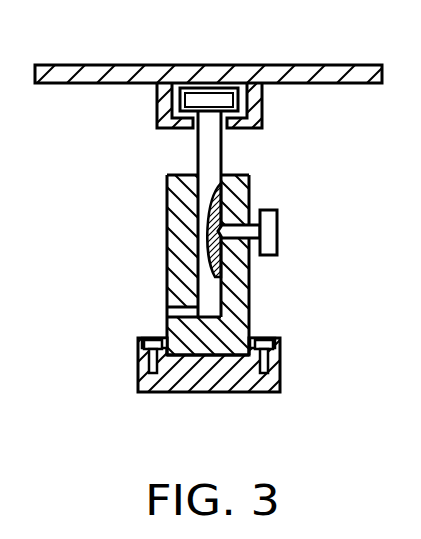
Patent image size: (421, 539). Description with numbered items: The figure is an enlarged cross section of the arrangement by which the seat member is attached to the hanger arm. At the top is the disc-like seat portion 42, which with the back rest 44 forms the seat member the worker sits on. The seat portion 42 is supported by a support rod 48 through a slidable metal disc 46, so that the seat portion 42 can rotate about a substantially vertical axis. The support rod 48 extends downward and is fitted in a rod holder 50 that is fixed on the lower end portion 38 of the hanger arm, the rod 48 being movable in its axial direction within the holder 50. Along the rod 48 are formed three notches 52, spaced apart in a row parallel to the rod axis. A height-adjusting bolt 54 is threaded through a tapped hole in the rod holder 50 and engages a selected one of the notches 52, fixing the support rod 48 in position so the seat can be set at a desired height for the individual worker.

The lower end portion 38 is at (208, 382).
The seat portion 42 is at (323, 75).
The back rest 44 is at (209, 105).
The slidable metal disc 46 is at (209, 87).
The support rod 48 is at (197, 159).
The rod holder 50 is at (180, 273).
The notches 52 is at (228, 270).
The height-adjusting bolt 54 is at (272, 225).